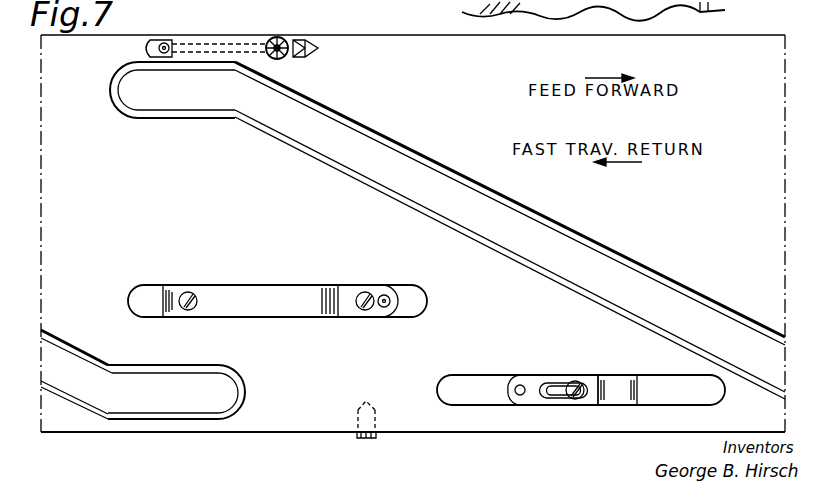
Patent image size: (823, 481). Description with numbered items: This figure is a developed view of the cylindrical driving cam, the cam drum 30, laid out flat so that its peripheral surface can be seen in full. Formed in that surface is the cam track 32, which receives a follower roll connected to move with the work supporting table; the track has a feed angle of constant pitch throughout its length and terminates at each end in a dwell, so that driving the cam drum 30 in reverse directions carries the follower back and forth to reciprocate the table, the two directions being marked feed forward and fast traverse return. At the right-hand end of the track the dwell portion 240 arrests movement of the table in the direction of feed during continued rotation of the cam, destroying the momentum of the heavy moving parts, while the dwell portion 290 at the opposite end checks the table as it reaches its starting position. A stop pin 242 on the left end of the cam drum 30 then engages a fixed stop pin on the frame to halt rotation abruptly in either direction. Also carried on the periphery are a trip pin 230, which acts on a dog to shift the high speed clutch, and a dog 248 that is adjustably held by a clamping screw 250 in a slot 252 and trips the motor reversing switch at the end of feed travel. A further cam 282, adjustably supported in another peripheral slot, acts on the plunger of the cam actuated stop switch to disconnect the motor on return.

The cam drum 30 is at (410, 42).
The cam track 32 is at (444, 164).
The trip pin 230 is at (290, 12).
The dwell portion 240 is at (155, 110).
The stop pin 242 is at (370, 440).
The dog 248 is at (622, 386).
The clamping screw 250 is at (570, 383).
The slot 252 is at (480, 402).
The cam 282 is at (278, 295).
The dwell portion 290 is at (150, 415).